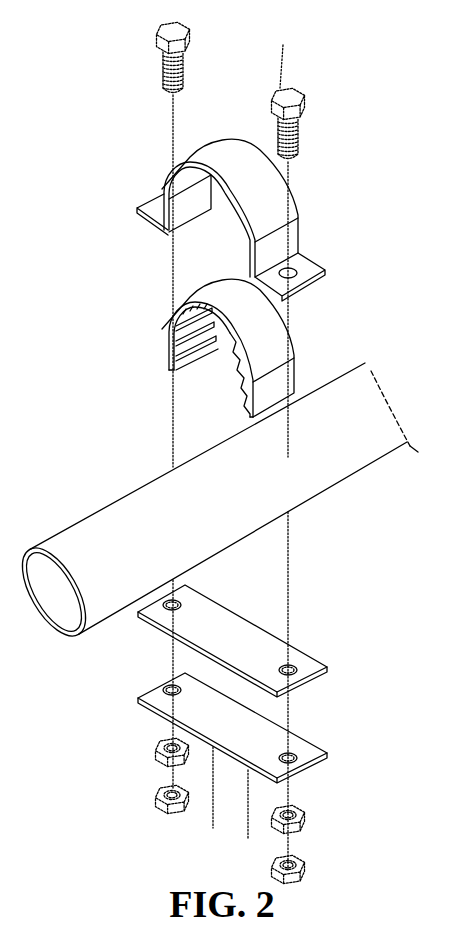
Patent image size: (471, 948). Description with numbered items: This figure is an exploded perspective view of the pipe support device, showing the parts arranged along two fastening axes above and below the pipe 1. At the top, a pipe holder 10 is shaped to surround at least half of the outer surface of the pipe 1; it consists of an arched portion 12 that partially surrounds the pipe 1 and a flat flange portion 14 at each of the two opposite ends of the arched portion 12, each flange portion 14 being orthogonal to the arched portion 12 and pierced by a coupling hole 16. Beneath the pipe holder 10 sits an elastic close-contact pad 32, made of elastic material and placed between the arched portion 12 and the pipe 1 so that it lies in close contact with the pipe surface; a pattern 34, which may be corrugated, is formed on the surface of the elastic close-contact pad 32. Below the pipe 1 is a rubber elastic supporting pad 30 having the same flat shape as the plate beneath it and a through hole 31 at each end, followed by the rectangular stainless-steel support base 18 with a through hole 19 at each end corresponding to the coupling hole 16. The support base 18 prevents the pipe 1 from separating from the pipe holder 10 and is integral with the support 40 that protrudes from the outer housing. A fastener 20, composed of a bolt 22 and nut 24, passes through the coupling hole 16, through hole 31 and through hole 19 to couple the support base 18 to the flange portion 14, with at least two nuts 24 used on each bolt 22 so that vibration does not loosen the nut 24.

The pipe 1 is at (87, 532).
The pipe holder 10 is at (192, 153).
The arched portion 12 is at (298, 203).
The flange portion 14 is at (137, 208).
The coupling hole 16 is at (314, 287).
The support base 18 is at (307, 747).
The through hole 19 is at (314, 767).
The fastener 20 is at (305, 92).
The bolt 22 is at (190, 31).
The nut 24 is at (152, 790).
The elastic supporting pad 30 is at (270, 642).
The through hole 31 is at (298, 668).
The elastic close-contact pad 32 is at (167, 317).
The pattern 34 is at (167, 350).
The support 40 is at (268, 838).